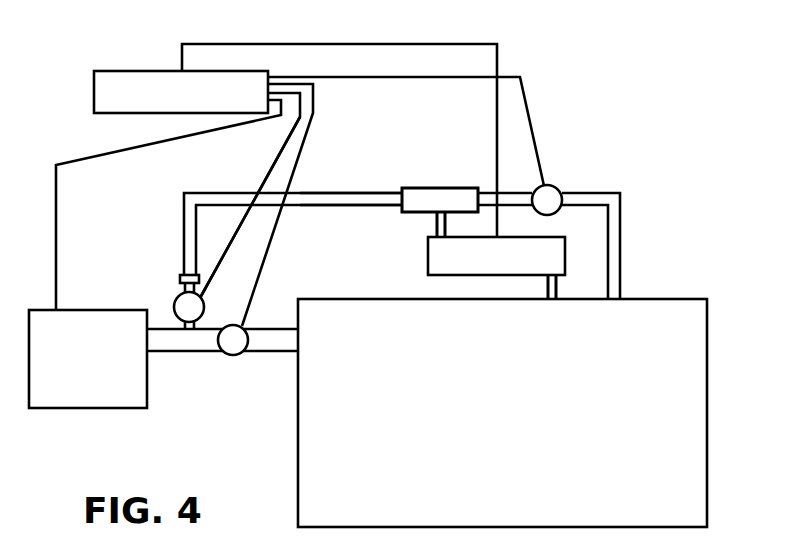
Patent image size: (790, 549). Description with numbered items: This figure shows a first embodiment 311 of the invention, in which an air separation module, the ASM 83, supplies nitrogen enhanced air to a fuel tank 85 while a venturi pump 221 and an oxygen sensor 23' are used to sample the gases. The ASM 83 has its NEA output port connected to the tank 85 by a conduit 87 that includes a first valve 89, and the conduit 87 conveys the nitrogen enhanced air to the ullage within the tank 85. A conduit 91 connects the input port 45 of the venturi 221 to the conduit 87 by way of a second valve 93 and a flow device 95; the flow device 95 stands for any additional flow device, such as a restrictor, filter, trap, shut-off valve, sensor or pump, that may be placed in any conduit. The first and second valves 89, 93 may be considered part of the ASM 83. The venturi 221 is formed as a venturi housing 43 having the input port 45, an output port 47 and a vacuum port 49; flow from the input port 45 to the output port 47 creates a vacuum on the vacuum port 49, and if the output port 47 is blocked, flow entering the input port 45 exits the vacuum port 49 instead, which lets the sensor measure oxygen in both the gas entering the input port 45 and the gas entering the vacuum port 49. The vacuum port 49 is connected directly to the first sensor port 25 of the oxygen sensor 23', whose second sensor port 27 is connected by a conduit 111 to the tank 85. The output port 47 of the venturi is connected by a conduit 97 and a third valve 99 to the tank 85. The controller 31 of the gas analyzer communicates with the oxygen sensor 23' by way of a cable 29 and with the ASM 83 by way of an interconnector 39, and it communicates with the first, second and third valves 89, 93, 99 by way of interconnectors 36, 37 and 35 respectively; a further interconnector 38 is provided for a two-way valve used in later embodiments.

The controller 31 is at (125, 70).
The cable 29 is at (181, 58).
The interconnector 35 is at (345, 77).
The interconnector 36 is at (314, 97).
The interconnector 37 is at (283, 158).
The interconnector 38 is at (286, 101).
The interconnector 39 is at (57, 177).
The conduit 91 is at (222, 192).
The input port 45 is at (375, 193).
The flow device 95 is at (178, 278).
The ASM 83 is at (88, 310).
The fuel tank 85 is at (680, 299).
The conduit 87 is at (172, 352).
The second valve 93 is at (173, 298).
The first valve 89 is at (236, 356).
The venturi housing 43 is at (420, 188).
The venturi device 221 is at (428, 174).
The output port 47 is at (487, 193).
The third valve 99 is at (558, 190).
The conduit 97 is at (620, 228).
The first sensor port 25 is at (435, 222).
The vacuum port 49 is at (441, 224).
The oxygen sensor 23' is at (455, 262).
The second sensor port 27 is at (560, 287).
The conduit 111 is at (558, 293).
The first embodiment 311 is at (604, 72).